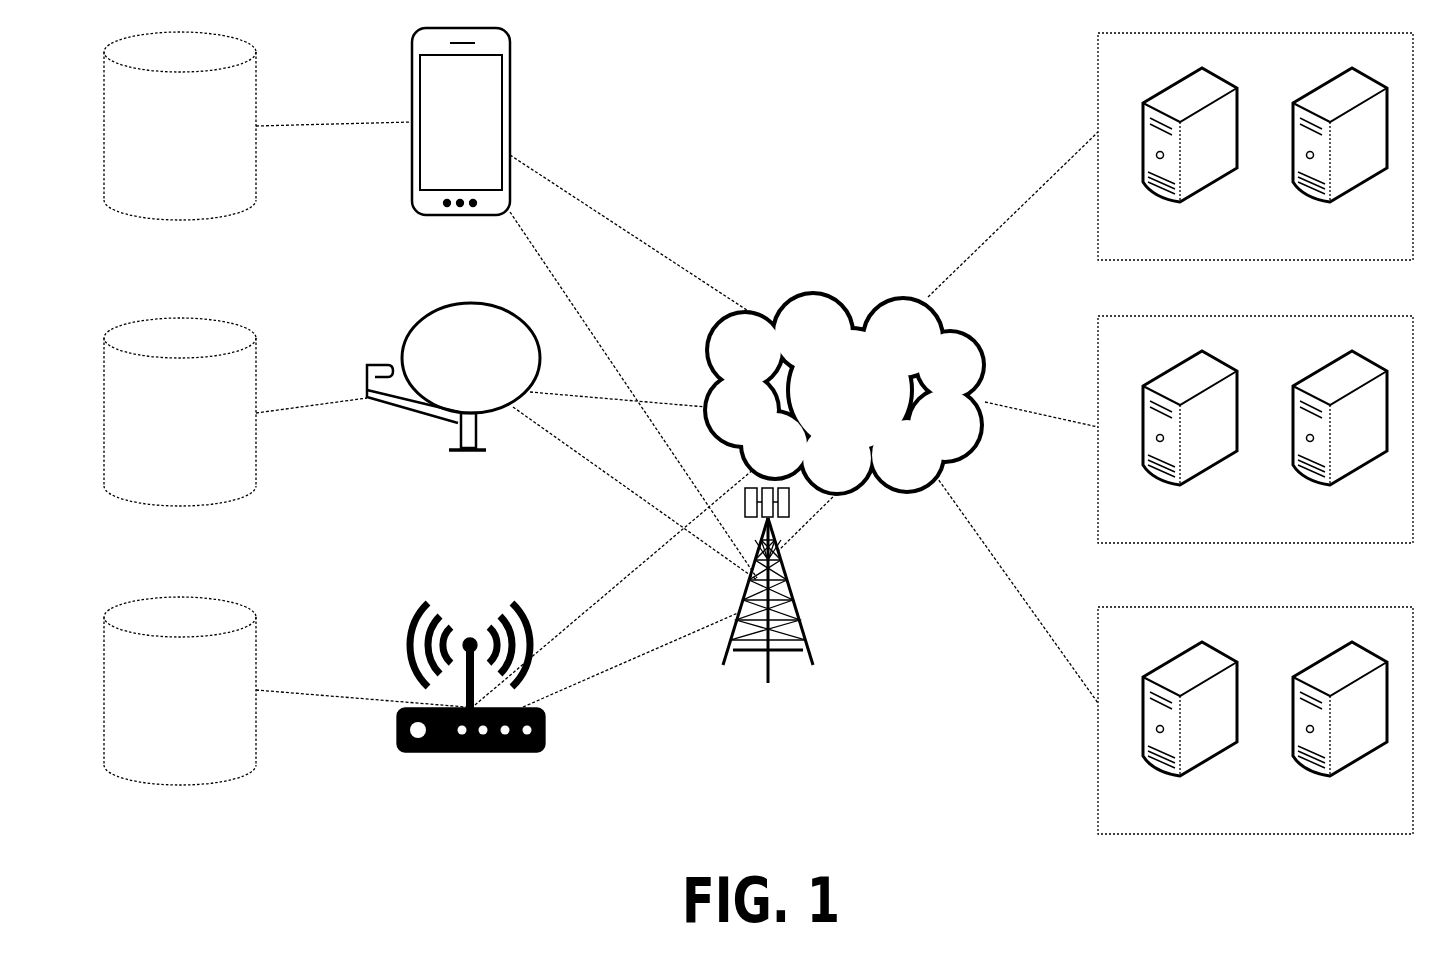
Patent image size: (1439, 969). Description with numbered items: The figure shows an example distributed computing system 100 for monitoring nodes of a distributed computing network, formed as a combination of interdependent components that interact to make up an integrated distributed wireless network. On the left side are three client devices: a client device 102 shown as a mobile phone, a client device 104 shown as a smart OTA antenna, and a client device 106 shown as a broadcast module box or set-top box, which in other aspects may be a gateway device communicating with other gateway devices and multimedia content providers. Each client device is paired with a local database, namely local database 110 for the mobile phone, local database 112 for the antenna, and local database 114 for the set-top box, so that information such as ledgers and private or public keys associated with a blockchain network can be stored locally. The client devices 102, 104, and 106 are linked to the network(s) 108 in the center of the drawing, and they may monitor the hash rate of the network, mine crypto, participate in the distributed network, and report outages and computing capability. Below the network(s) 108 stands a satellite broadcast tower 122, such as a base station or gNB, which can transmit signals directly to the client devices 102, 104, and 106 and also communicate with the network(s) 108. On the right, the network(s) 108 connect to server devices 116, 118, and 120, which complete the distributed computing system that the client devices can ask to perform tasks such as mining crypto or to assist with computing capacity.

The system 100 is at (772, 103).
The client device 102 is at (443, 141).
The client device 104 is at (442, 511).
The client device 106 is at (455, 801).
The network(s) 108 is at (825, 433).
The local database 110 is at (162, 137).
The local database 112 is at (162, 423).
The local database 114 is at (162, 703).
The server device 116 is at (1240, 246).
The server device 118 is at (1240, 529).
The server device 120 is at (1240, 819).
The satellite broadcast tower 122 is at (750, 731).